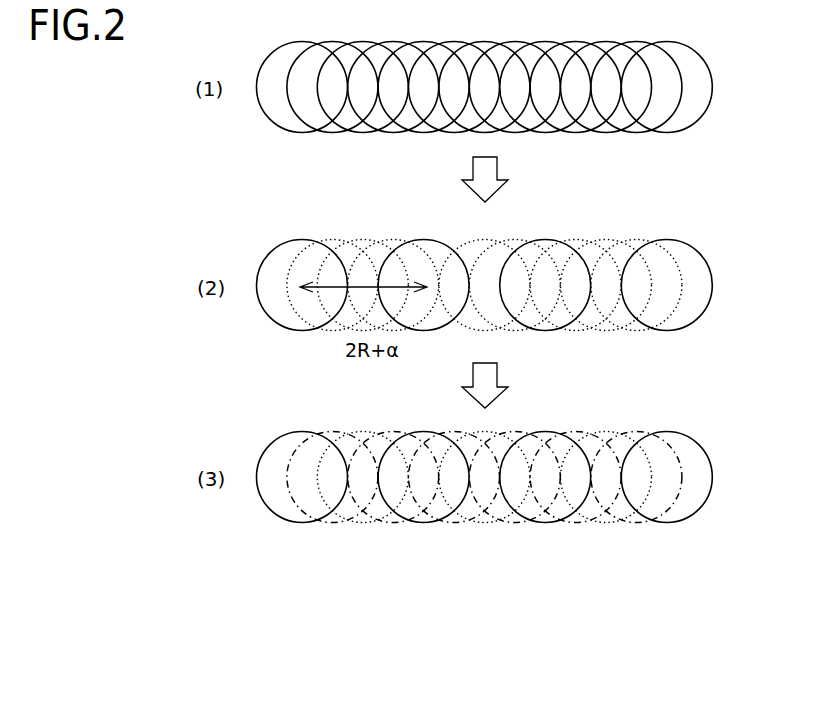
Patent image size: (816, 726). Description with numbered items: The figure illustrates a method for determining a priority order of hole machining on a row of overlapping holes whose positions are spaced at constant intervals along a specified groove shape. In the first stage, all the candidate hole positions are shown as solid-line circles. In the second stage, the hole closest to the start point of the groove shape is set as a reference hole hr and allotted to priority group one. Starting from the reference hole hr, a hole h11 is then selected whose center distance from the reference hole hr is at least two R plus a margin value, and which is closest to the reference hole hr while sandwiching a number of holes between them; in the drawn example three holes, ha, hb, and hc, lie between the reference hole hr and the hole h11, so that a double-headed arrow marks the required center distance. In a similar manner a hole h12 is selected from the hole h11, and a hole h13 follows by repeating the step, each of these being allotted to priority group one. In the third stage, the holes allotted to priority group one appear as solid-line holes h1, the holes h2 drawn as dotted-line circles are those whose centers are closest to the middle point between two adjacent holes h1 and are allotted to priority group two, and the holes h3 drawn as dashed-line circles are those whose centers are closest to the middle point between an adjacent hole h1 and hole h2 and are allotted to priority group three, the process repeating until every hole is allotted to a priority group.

The reference hole hr is at (303, 228).
The hole h11 is at (398, 247).
The hole h12 is at (542, 240).
The hole h13 is at (680, 240).
The hole ha is at (292, 308).
The hole hb is at (325, 308).
The hole hc is at (355, 310).
The holes of priority group 1 h1 is at (267, 505).
The holes of priority group 2 h2 is at (338, 518).
The holes of priority group 3 h3 is at (305, 516).